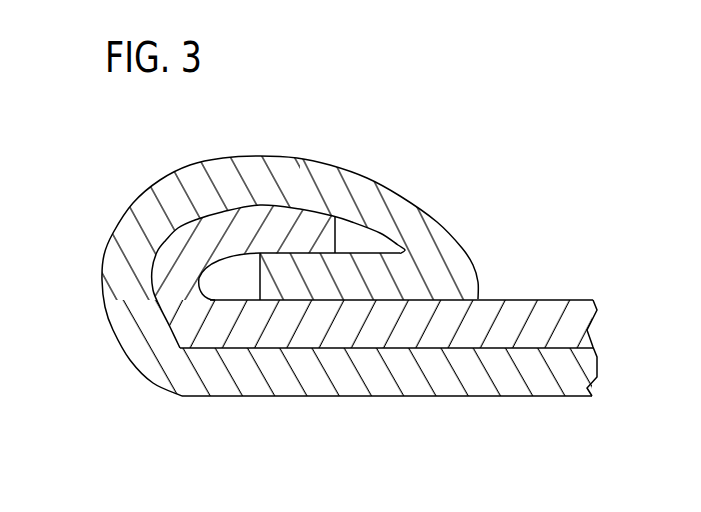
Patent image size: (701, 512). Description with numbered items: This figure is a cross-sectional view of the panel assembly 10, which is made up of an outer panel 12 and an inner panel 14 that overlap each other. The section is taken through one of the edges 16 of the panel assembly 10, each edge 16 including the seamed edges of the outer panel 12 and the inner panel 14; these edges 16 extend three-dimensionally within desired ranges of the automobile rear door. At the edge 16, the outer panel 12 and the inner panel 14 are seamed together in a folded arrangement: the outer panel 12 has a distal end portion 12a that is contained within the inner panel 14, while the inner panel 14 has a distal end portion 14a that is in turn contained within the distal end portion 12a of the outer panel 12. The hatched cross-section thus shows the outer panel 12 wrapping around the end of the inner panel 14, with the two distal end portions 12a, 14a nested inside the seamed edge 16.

The panel assembly 10 is at (485, 113).
The outer panel 12 is at (347, 322).
The distal end portion of the outer panel 12a is at (260, 275).
The inner panel 14 is at (374, 300).
The distal end portion of the inner panel 14a is at (401, 207).
The edge 16 is at (110, 222).